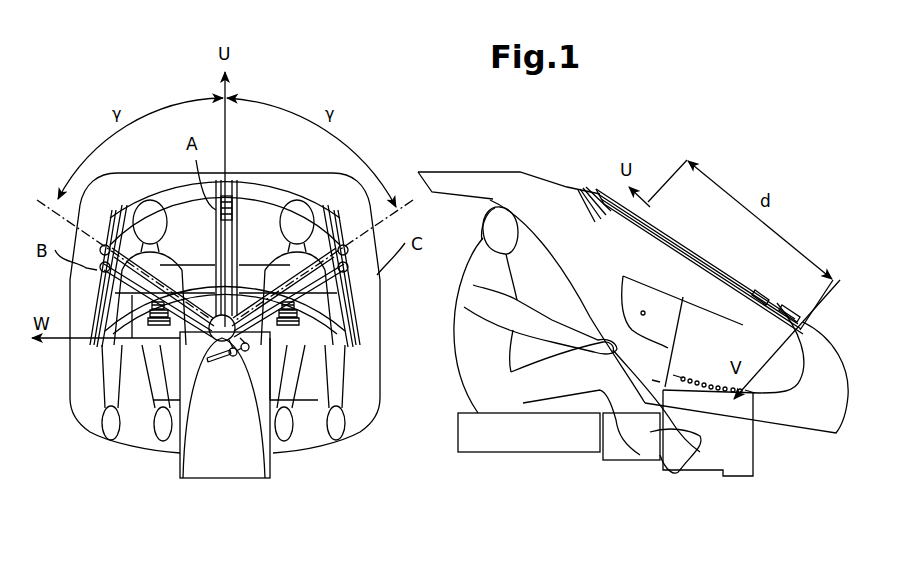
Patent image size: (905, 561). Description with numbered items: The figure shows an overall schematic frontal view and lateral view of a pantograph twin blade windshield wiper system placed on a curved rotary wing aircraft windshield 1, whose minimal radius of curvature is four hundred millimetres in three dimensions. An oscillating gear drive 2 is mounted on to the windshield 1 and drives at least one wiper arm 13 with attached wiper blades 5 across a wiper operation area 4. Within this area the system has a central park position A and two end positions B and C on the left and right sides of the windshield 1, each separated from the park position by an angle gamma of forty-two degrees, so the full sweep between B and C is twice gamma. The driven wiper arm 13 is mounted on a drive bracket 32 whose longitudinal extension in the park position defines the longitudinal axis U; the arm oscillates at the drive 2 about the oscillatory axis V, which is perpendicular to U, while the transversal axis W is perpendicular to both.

The windshield 1 is at (362, 408).
The oscillating gear drive 2 is at (222, 358).
The wiper operation area 4 is at (252, 215).
The wiper blades 5 is at (357, 312).
The wiper arm 13 is at (296, 327).
The drive bracket 32 is at (248, 350).